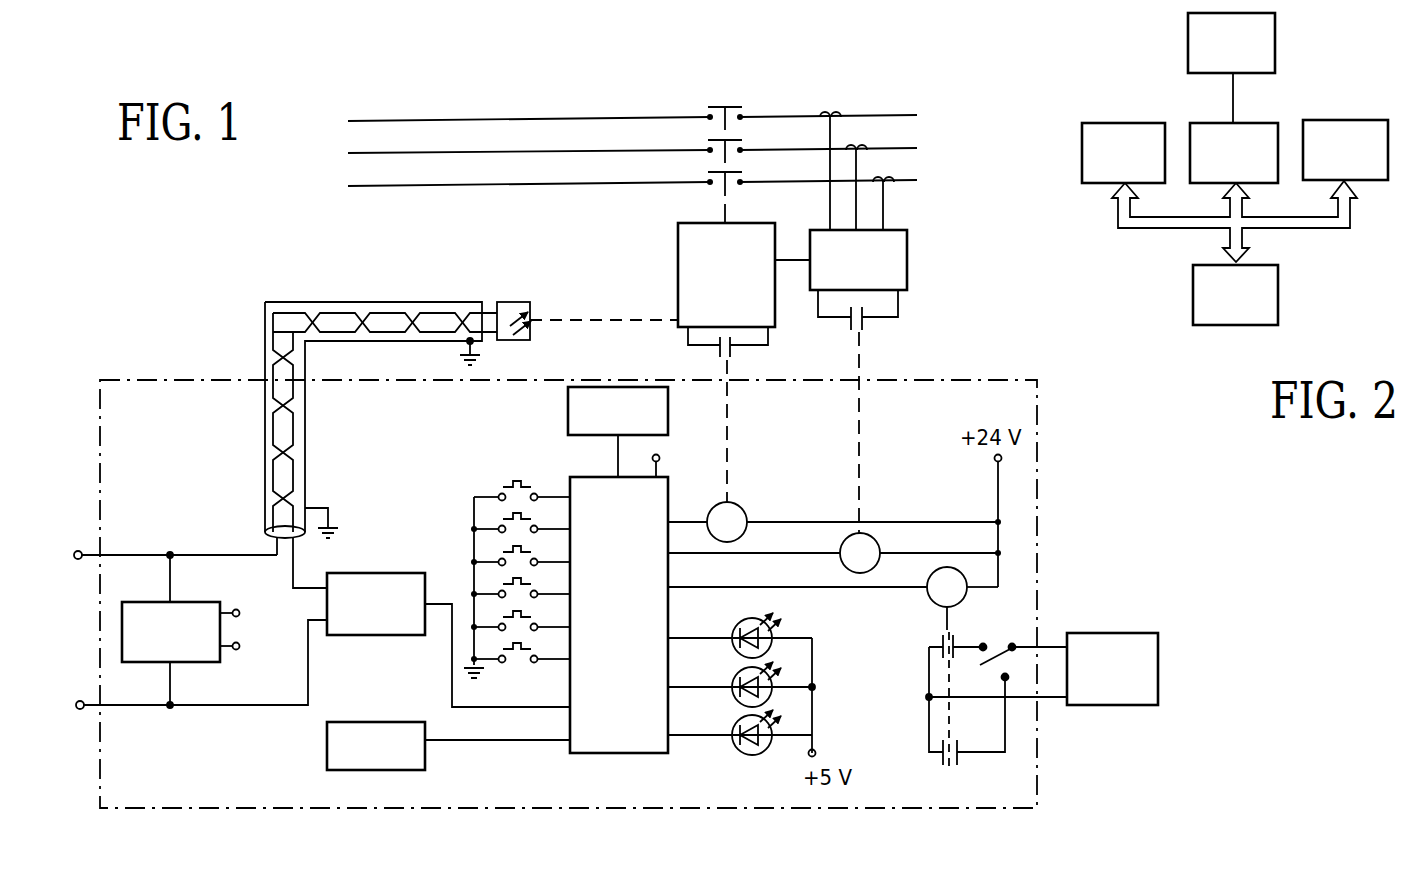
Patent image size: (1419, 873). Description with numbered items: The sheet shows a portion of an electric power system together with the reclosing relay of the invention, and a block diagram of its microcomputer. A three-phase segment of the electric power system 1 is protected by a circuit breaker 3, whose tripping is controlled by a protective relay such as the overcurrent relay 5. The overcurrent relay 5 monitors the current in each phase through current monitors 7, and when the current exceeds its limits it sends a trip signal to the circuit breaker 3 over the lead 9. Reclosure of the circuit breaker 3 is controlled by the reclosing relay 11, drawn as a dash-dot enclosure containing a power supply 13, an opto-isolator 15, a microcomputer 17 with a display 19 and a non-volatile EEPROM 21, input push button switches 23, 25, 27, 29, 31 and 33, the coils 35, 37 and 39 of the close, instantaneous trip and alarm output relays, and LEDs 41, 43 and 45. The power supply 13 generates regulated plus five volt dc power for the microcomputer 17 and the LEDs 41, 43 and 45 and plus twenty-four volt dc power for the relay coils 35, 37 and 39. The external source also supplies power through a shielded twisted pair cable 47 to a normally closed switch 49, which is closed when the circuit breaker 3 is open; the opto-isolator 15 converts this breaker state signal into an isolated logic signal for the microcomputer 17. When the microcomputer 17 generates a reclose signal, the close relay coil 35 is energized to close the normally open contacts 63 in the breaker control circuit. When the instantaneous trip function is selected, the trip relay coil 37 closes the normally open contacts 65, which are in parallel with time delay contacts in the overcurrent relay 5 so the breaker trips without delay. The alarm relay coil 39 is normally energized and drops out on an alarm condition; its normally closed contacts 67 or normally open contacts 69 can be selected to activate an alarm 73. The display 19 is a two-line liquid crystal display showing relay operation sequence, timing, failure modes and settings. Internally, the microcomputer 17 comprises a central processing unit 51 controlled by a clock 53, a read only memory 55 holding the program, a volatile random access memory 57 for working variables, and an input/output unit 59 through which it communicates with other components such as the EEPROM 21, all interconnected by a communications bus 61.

In FIG. 1, the electric power system 1 is at (418, 100).
In FIG. 1, the circuit breaker 3 is at (678, 250).
In FIG. 1, the overcurrent relay 5 is at (908, 248).
In FIG. 1, the current monitors 7 is at (889, 176).
In FIG. 1, the lead 9 is at (797, 258).
In FIG. 1, the reclosing relay 11 is at (153, 380).
In FIG. 1, the power supply 13 is at (182, 602).
In FIG. 1, the opto-isolator 15 is at (381, 573).
In FIG. 1, the microcomputer 17 is at (600, 753).
In FIG. 2, the microcomputer 17 is at (1343, 289).
In FIG. 1, the display 19 is at (568, 408).
In FIG. 1, the EEPROM 21 is at (327, 750).
In FIG. 1, the input push button switch 23 is at (546, 481).
In FIG. 1, the input push button switch 25 is at (546, 513).
In FIG. 1, the input push button switch 27 is at (546, 546).
In FIG. 1, the input push button switch 29 is at (546, 578).
In FIG. 1, the input push button switch 31 is at (546, 611).
In FIG. 1, the input push button switch 33 is at (546, 643).
In FIG. 1, the coil of close relay K1 35 is at (742, 508).
In FIG. 1, the coil of instantaneous trip relay K2 37 is at (877, 540).
In FIG. 1, the coil of alarm relay K3 39 is at (964, 600).
In FIG. 1, the LED 41 is at (737, 627).
In FIG. 1, the LED 43 is at (737, 676).
In FIG. 1, the LED 45 is at (737, 724).
In FIG. 1, the shielded twisted pair cable 47 is at (386, 302).
In FIG. 1, the normally closed switch 49 is at (542, 318).
In FIG. 2, the central processing unit 51 is at (1258, 122).
In FIG. 2, the clock 53 is at (1188, 38).
In FIG. 2, the read only memory 55 is at (1122, 122).
In FIG. 2, the random access memory 57 is at (1363, 120).
In FIG. 2, the input/output unit 59 is at (1240, 325).
In FIG. 2, the communications bus 61 is at (1170, 230).
In FIG. 1, the normally open contacts 63 is at (768, 357).
In FIG. 1, the normally open contacts 65 is at (864, 338).
In FIG. 1, the normally closed contacts 67 is at (942, 632).
In FIG. 1, the normally open contacts 69 is at (943, 772).
In FIG. 1, the alarm 73 is at (1095, 633).